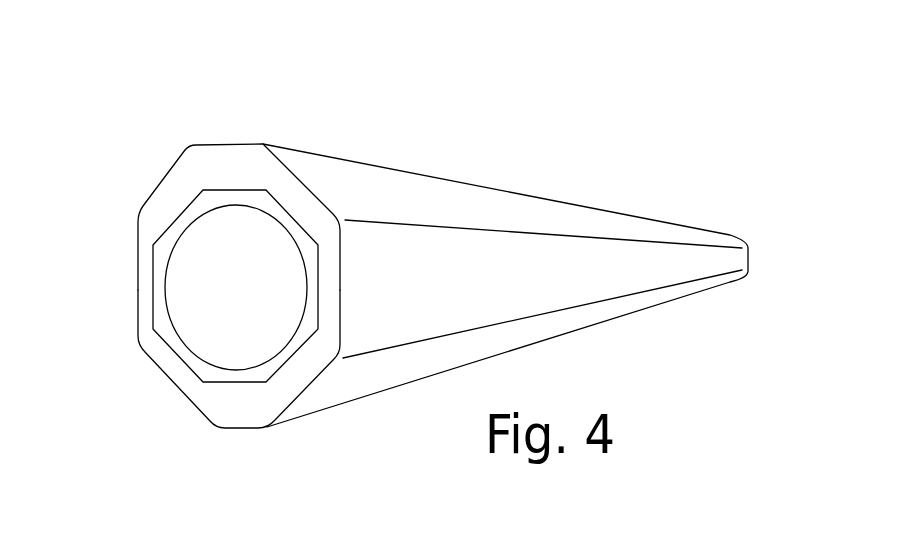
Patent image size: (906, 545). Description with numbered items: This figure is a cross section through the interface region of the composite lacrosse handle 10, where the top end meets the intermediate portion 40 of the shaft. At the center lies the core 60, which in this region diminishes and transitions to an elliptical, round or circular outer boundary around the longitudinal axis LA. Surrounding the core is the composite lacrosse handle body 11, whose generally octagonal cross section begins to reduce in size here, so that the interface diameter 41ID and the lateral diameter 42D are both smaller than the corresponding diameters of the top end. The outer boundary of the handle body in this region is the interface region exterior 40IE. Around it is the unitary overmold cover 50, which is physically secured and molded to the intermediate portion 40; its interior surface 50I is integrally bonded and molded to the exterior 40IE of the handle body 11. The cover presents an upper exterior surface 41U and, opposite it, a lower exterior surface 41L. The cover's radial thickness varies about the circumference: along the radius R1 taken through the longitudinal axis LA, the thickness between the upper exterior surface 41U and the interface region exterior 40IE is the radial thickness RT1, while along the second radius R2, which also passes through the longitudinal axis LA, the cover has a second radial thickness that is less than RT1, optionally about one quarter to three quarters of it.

The composite lacrosse handle 10 is at (143, 138).
The lacrosse handle body 11 is at (167, 250).
The intermediate portion 40 is at (505, 180).
The interface region exterior 40IE is at (278, 240).
The upper exterior surface 41U is at (260, 143).
The lower surface of hub 41L is at (340, 315).
The interface diameter 41ID is at (220, 467).
The lateral diameter 42D is at (375, 305).
The overmold cover 50 is at (388, 167).
The interior surface of the overmolded cover 50I is at (331, 222).
The core 60 is at (210, 325).
The longitudinal axis LA is at (237, 292).
The radius R1 is at (237, 156).
The radius R2 is at (328, 288).
The radial thickness RT1 is at (183, 250).